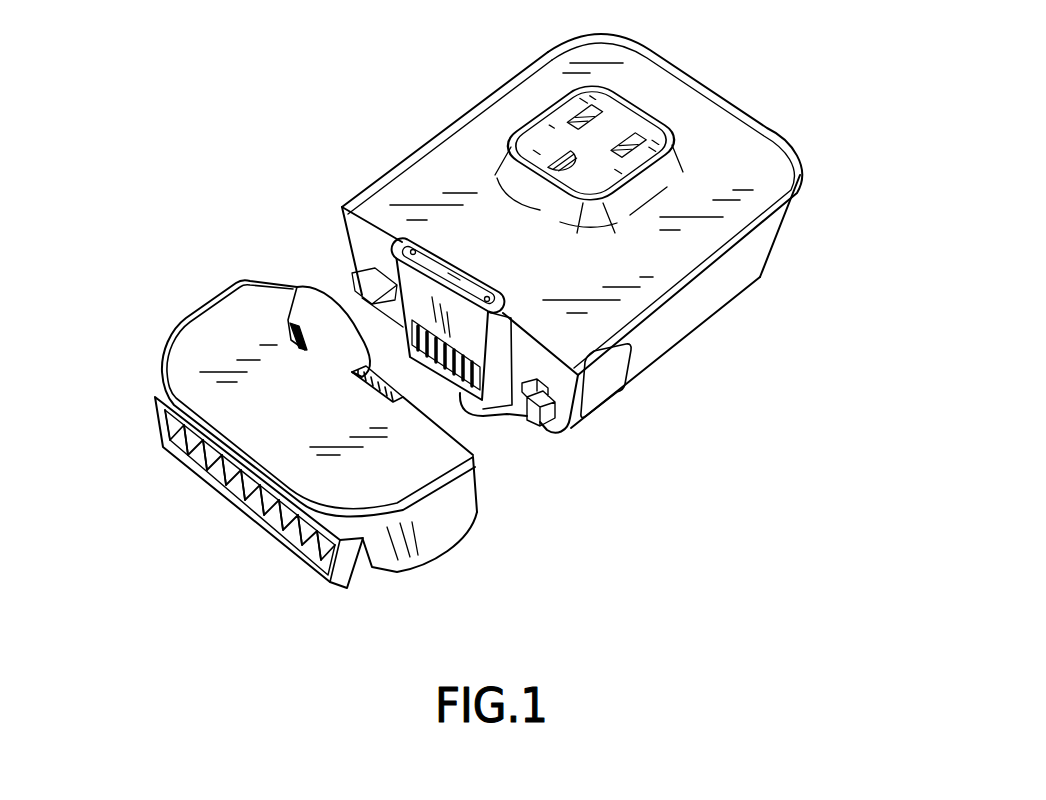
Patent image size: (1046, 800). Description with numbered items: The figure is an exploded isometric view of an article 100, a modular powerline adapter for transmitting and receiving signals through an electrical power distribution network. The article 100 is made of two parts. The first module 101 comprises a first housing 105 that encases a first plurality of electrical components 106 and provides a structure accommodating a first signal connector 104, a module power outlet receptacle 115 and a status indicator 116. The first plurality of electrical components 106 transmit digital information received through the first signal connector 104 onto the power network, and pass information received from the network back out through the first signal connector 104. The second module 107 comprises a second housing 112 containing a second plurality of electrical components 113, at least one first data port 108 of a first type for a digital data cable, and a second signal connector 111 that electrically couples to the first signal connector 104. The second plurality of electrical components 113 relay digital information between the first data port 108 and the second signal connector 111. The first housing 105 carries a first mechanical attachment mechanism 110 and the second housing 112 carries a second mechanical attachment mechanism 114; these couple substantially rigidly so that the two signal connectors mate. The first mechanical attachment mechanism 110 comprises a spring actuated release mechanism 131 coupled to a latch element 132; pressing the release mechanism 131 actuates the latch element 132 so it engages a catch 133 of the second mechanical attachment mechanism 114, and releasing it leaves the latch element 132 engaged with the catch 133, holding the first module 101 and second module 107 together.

The article 100 is at (856, 102).
The first module 101 is at (692, 383).
The first signal connector 104 is at (440, 427).
The first housing 105 is at (760, 277).
The first plurality of electrical components 106 is at (415, 145).
The second module 107 is at (430, 590).
The first data port 108 is at (310, 557).
The first mechanical attachment mechanism 110 is at (612, 432).
The second signal connector 111 is at (290, 288).
The second housing 112 is at (373, 567).
The second plurality of electrical components 113 is at (170, 332).
The second mechanical attachment mechanism 114 is at (510, 497).
The module power outlet receptacle 115 is at (560, 160).
The status indicator 116 is at (397, 243).
The spring actuated release mechanism 131 is at (618, 375).
The latch element 132 is at (540, 460).
The catch 133 is at (477, 512).